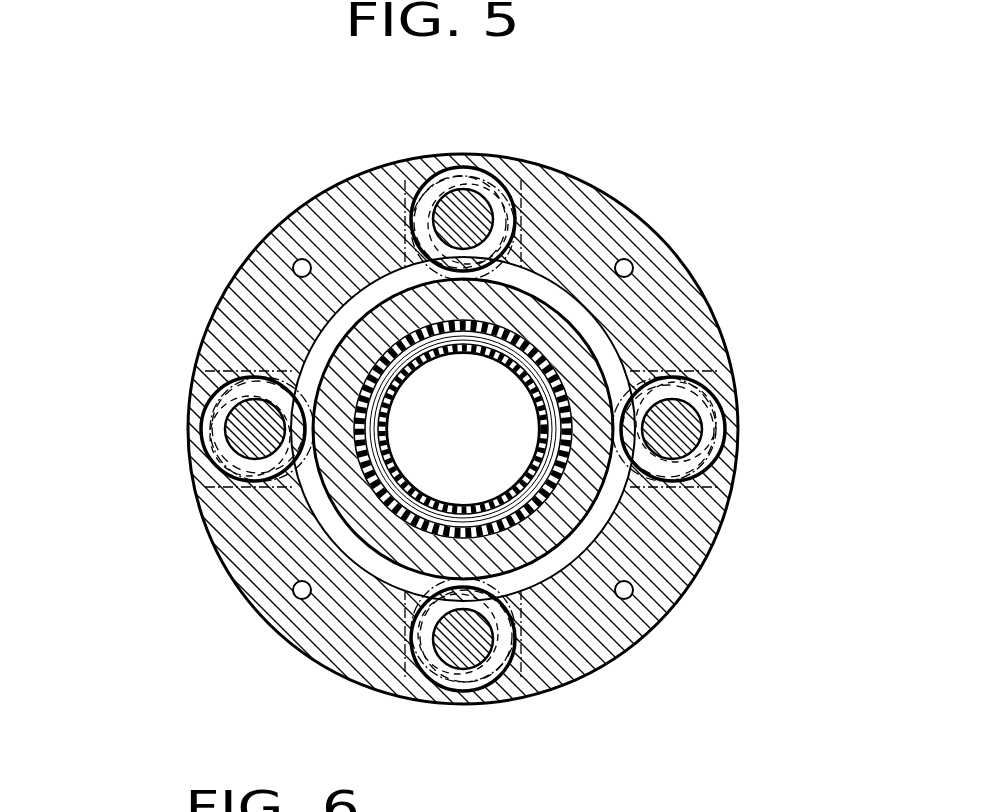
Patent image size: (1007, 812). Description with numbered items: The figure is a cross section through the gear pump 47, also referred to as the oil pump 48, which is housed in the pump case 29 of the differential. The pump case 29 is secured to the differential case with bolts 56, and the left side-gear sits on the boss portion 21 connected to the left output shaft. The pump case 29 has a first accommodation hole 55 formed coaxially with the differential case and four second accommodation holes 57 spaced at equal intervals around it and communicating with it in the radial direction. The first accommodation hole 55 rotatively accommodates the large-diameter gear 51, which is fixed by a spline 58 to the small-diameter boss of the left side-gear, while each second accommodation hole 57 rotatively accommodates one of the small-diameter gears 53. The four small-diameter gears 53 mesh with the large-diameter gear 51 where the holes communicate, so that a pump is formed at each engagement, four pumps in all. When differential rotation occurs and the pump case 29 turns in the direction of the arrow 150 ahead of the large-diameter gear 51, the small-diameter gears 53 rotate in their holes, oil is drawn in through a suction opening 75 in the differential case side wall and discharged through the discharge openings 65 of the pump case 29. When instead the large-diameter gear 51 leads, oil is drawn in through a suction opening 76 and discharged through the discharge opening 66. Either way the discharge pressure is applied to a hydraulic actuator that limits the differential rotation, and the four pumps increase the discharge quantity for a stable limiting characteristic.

The boss portion 21 is at (548, 472).
The pump case 29 is at (706, 295).
The gear pump 47 is at (486, 150).
The oil pump 48 is at (646, 204).
The large-diameter gear 51 is at (580, 655).
The small-diameter gears 53 is at (512, 172).
The first accommodation hole 55 is at (305, 212).
The bolts 56 is at (636, 263).
The second accommodation holes 57 is at (465, 170).
The spline 58 is at (240, 578).
The discharge openings 65 is at (588, 176).
The discharge opening 66 is at (406, 178).
The suction opening 75 is at (378, 180).
The suction opening 76 is at (553, 175).
The arrow 150 is at (168, 188).